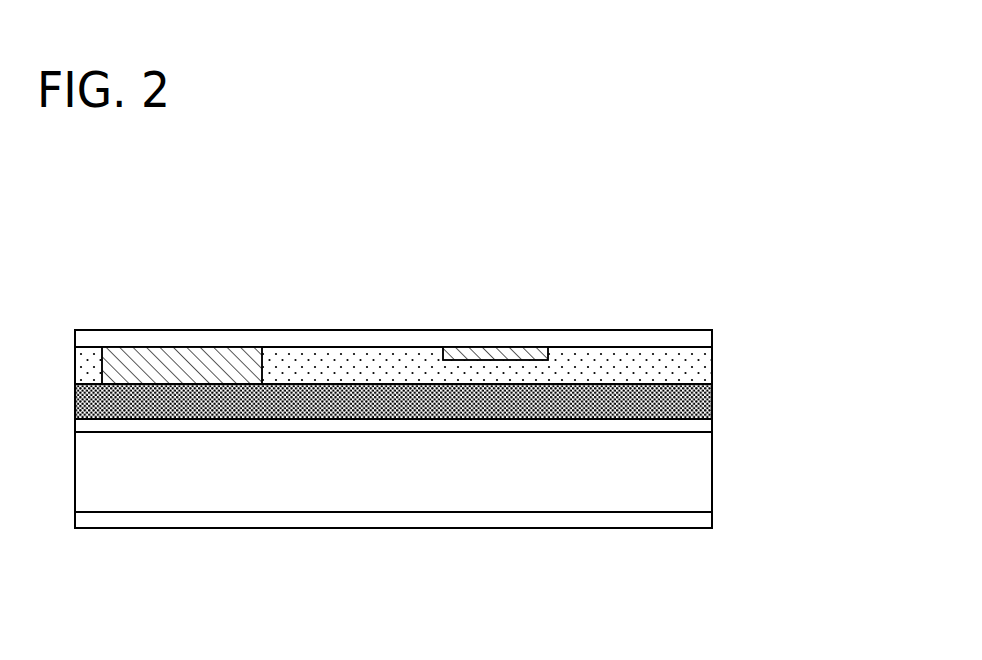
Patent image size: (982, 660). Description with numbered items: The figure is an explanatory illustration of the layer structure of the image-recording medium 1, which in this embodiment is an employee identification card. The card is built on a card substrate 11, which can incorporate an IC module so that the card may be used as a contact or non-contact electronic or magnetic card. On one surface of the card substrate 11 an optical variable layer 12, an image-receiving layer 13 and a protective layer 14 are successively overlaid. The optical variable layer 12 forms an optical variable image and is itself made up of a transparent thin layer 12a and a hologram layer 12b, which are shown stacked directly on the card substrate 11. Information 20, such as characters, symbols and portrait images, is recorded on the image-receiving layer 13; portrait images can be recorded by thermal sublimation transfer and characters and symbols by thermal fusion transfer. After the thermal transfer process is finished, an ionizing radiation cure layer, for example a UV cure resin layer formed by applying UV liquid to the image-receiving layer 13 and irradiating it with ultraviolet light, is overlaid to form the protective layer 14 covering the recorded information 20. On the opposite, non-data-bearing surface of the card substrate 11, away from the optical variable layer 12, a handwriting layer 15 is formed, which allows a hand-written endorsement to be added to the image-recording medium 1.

The image-recording medium 1 is at (333, 322).
The card substrate 11 is at (698, 469).
The optical variable layer 12 is at (826, 383).
The transparent thin layer 12a is at (698, 426).
The hologram layer 12b is at (698, 396).
The image-receiving layer 13 is at (702, 365).
The protective layer 14 is at (162, 340).
The handwriting layer 15 is at (698, 518).
The information 20 is at (223, 353).